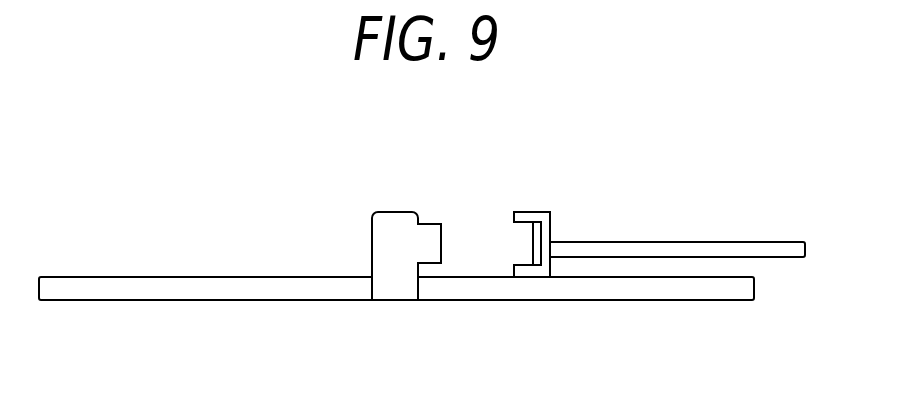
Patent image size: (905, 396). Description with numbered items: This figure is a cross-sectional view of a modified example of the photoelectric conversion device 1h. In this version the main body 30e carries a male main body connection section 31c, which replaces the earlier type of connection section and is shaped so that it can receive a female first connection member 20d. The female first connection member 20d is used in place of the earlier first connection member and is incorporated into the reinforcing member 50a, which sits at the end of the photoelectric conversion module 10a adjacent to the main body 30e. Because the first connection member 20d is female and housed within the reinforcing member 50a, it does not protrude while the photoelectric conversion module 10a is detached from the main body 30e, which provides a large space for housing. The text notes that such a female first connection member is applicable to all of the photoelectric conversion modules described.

The photoelectric conversion device 1h is at (220, 235).
The main body 30e is at (158, 300).
The main body connection section 31c is at (433, 230).
The reinforcing member 50a is at (534, 218).
The first connection member 20d is at (533, 240).
The photoelectric conversion module 10a is at (678, 247).